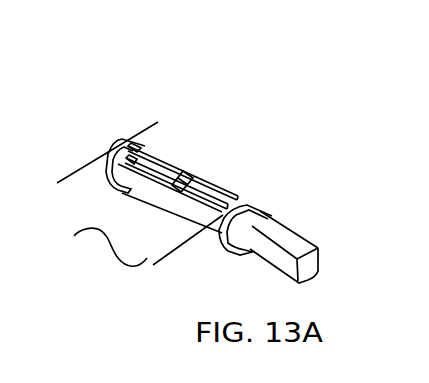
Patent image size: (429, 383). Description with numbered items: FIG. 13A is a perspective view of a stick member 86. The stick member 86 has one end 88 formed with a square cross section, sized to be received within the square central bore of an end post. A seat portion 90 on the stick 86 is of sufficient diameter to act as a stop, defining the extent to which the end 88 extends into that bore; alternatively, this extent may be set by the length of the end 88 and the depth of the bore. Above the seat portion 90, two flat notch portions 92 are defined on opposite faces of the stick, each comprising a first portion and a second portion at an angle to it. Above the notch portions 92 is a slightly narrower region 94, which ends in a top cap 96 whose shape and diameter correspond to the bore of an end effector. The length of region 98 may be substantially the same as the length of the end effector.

The stick member 86 is at (313, 69).
The end 88 is at (297, 232).
The seat portion 90 is at (305, 200).
The flat notch portions 92 is at (248, 201).
The narrower region 94 is at (190, 173).
The top cap 96 is at (132, 136).
The region 98 is at (57, 183).